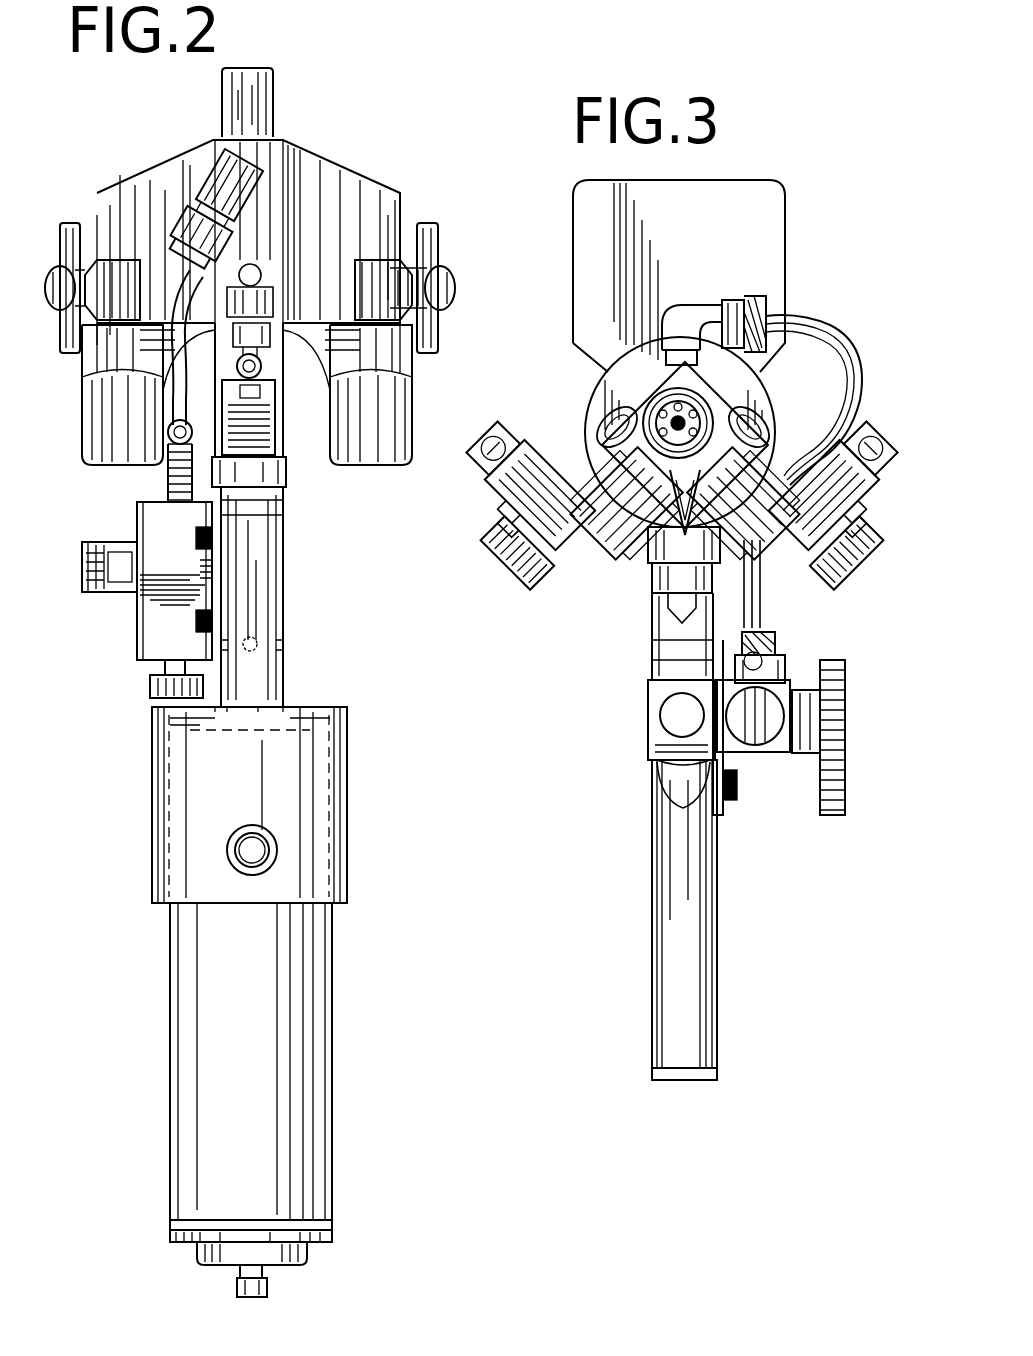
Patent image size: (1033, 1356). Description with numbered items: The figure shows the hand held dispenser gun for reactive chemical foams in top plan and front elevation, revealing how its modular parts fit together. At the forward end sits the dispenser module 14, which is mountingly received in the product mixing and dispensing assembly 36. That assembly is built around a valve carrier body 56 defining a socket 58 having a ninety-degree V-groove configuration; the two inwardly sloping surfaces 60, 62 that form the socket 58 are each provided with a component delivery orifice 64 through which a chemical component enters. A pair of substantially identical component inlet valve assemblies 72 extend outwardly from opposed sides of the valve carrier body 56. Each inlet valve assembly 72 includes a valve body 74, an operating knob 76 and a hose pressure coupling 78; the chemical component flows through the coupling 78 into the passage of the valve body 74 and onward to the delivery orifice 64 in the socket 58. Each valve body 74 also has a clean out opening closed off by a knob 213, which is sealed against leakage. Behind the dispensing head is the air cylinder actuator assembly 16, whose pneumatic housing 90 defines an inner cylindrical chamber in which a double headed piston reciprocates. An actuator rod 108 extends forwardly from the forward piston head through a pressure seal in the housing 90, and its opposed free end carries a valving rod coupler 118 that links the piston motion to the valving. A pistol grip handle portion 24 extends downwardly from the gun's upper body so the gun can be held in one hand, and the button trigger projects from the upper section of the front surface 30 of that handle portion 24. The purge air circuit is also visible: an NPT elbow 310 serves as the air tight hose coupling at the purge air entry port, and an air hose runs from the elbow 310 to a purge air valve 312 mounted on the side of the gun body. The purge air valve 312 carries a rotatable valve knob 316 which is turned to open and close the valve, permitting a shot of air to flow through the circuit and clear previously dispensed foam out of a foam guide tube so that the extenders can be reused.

In FIG. 2, the dispenser module 14 is at (290, 168).
In FIG. 3, the dispenser module 14 is at (660, 392).
In FIG. 2, the air cylinder actuator assembly 16 is at (155, 830).
In FIG. 3, the pistol grip handle portion 24 is at (717, 1023).
In FIG. 3, the front surface 30 is at (700, 960).
In FIG. 2, the product mixing and dispensing assembly 36 is at (207, 172).
In FIG. 3, the product mixing and dispensing assembly 36 is at (597, 486).
In FIG. 2, the valve carrier body 56 is at (333, 177).
In FIG. 3, the valve carrier body 56 is at (630, 548).
In FIG. 3, the socket 58 is at (757, 427).
In FIG. 3, the inwardly sloping surface 60 is at (592, 466).
In FIG. 3, the inwardly sloping surface 62 is at (800, 462).
In FIG. 3, the component delivery orifice 64 is at (552, 531).
In FIG. 2, the component inlet valve assembly 72 is at (112, 348).
In FIG. 3, the component inlet valve assembly 72 is at (562, 588).
In FIG. 2, the valve body 74 is at (382, 212).
In FIG. 2, the operating knob 76 is at (440, 290).
In FIG. 3, the operating knob 76 is at (850, 473).
In FIG. 2, the hose pressure coupling 78 is at (372, 437).
In FIG. 2, the pneumatic housing 90 is at (292, 1098).
In FIG. 3, the pneumatic housing 90 is at (616, 216).
In FIG. 2, the actuator rod 108 is at (248, 510).
In FIG. 2, the valving rod coupler 118 is at (248, 427).
In FIG. 2, the knob 213 is at (88, 196).
In FIG. 3, the knob 213 is at (530, 557).
In FIG. 3, the NPT elbow 310 is at (672, 300).
In FIG. 2, the purge air valve 312 is at (168, 593).
In FIG. 3, the purge air valve 312 is at (777, 756).
In FIG. 2, the rotatable valve knob 316 is at (87, 547).
In FIG. 3, the rotatable valve knob 316 is at (843, 720).